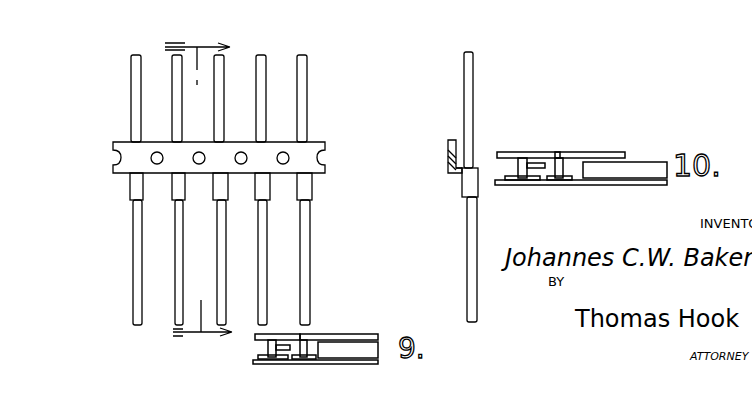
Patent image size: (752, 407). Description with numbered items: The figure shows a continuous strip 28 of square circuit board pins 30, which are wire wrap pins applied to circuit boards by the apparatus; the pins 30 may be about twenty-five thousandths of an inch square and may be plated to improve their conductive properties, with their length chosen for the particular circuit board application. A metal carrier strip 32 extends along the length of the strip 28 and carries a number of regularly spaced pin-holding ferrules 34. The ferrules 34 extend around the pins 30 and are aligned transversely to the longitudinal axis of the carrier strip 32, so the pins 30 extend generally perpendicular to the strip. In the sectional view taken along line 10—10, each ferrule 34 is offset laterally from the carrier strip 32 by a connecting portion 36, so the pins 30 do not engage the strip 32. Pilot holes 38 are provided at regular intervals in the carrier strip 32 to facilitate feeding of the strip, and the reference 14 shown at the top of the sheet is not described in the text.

In FIG. 9, the section line 10 is at (198, 185).
In FIG. 9, the frame 14 is at (28, 3).
In FIG. 9, the continuous strip 28 is at (323, 126).
In FIG. 10, the continuous strip 28 is at (487, 116).
In FIG. 9, the circuit board pins 30 is at (298, 64).
In FIG. 10, the circuit board pins 30 is at (475, 58).
In FIG. 9, the metal carrier strip 32 is at (113, 152).
In FIG. 10, the metal carrier strip 32 is at (448, 141).
In FIG. 9, the pin-holding ferrules 34 is at (173, 197).
In FIG. 10, the pin-holding ferrules 34 is at (477, 184).
In FIG. 10, the connecting portion 36 is at (460, 174).
In FIG. 9, the pilot holes 38 is at (160, 156).
In FIG. 10, the pilot holes 38 is at (447, 155).